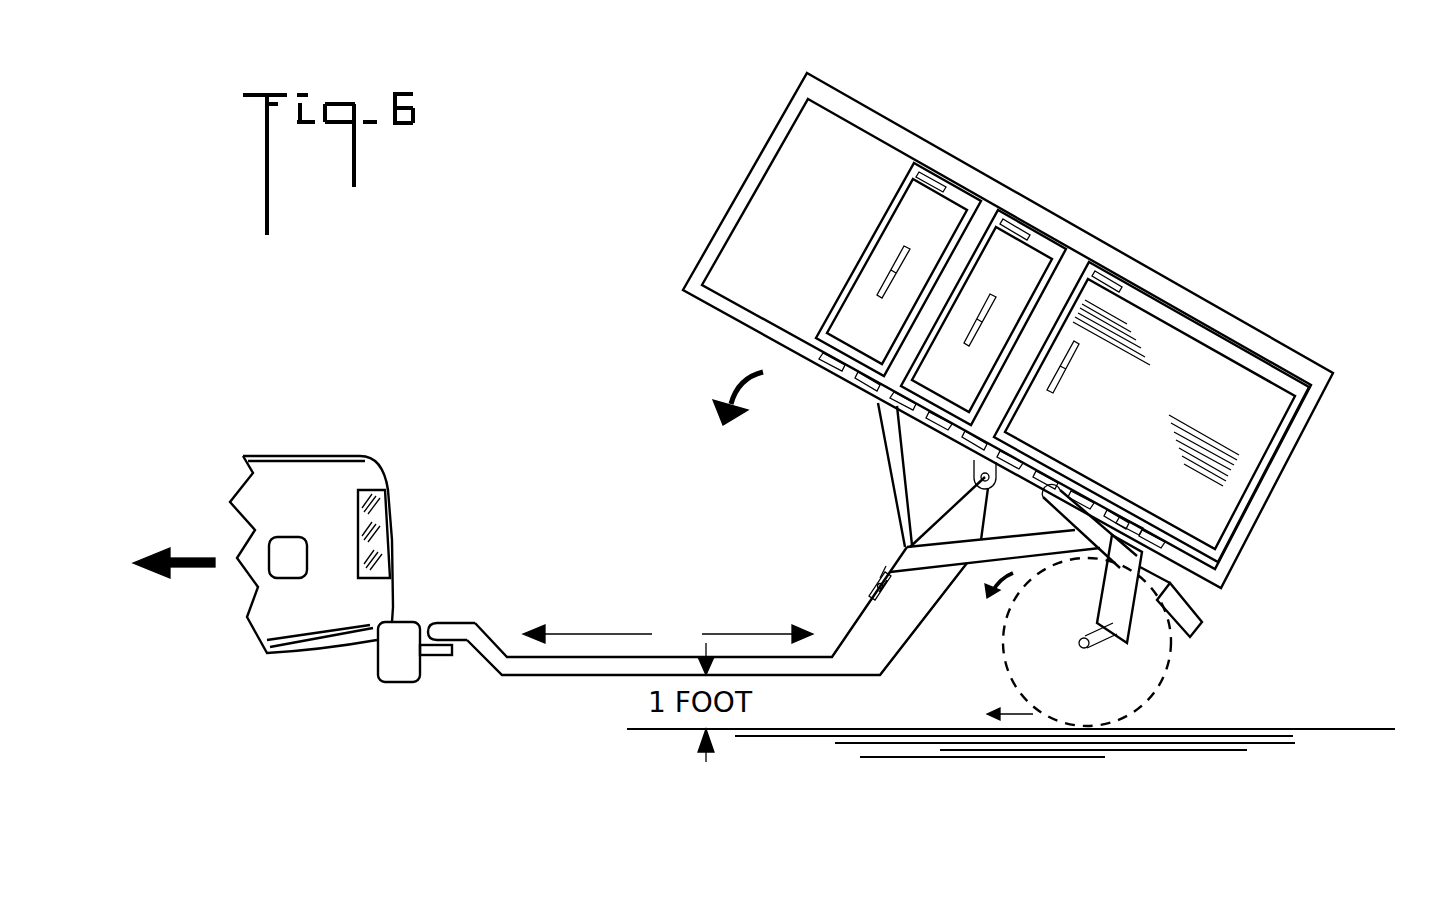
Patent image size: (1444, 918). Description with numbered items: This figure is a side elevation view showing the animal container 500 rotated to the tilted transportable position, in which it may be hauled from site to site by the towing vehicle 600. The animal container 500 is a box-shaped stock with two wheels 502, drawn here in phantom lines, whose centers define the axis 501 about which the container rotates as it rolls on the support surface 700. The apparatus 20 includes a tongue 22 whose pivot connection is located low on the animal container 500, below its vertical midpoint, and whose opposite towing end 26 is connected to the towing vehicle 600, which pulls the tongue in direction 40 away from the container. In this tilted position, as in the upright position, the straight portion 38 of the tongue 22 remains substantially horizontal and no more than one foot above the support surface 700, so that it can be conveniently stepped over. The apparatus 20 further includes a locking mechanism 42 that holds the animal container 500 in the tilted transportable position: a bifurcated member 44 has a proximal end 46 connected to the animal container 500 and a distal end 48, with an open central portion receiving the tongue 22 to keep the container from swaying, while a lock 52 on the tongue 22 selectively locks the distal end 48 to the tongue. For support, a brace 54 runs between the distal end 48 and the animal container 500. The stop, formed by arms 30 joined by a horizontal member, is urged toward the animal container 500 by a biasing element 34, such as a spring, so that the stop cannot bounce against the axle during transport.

The animal container 500 is at (938, 120).
The towing vehicle 600 is at (397, 450).
The direction 40 is at (198, 568).
The towing end 26 is at (447, 632).
The tongue 22 is at (573, 676).
The straight portion 38 is at (668, 632).
The apparatus 20 is at (812, 548).
The locking mechanism 42 is at (878, 556).
The lock 52 is at (872, 594).
The brace 54 is at (888, 475).
The distal end 48 is at (910, 545).
The bifurcated member 44 is at (935, 555).
The arms 30 is at (1112, 530).
The proximal end 46 is at (1132, 522).
The biasing element 34 is at (1177, 603).
The wheels 502 is at (1003, 668).
The axis 501 is at (1089, 647).
The support surface 700 is at (1258, 748).